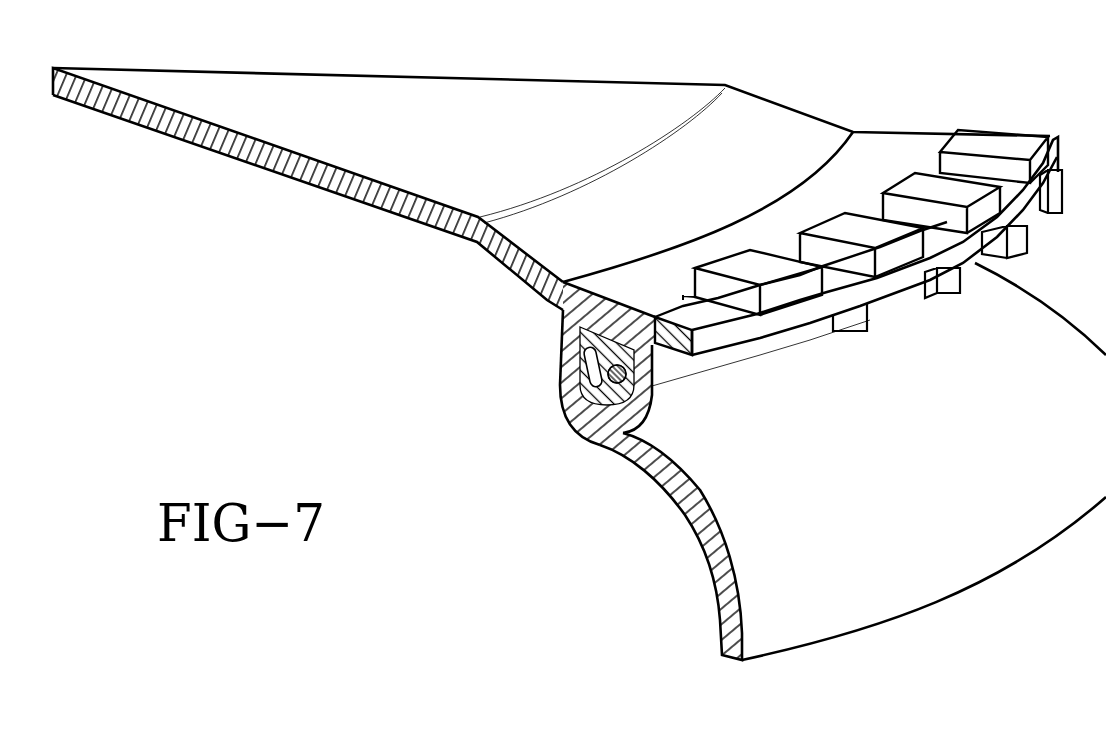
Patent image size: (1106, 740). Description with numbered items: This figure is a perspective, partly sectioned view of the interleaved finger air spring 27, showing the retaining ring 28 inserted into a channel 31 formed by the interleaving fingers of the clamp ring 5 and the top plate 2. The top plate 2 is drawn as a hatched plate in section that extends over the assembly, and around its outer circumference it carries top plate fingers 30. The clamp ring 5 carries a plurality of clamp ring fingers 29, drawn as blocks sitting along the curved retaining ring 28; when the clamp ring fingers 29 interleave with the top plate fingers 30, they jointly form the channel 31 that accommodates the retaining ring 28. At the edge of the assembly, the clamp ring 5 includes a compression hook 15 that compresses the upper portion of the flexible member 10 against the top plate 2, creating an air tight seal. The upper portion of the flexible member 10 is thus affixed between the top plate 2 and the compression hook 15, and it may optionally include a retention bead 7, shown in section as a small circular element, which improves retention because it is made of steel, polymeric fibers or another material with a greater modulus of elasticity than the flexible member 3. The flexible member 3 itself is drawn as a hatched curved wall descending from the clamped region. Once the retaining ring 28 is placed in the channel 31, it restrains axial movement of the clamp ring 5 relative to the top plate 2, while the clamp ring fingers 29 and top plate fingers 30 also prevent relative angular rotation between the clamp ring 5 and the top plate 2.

The top plate 2 is at (325, 172).
The flexible member 3 is at (704, 540).
The clamp ring 5 is at (621, 412).
The retention bead 7 is at (617, 386).
The upper portion of the flexible member 10 is at (600, 338).
The compression hook 15 is at (590, 358).
The interleaved finger air spring 27 is at (414, 352).
The retaining ring 28 is at (877, 287).
The clamp ring fingers 29 is at (790, 292).
The top plate fingers 30 is at (705, 372).
The channel 31 is at (722, 352).